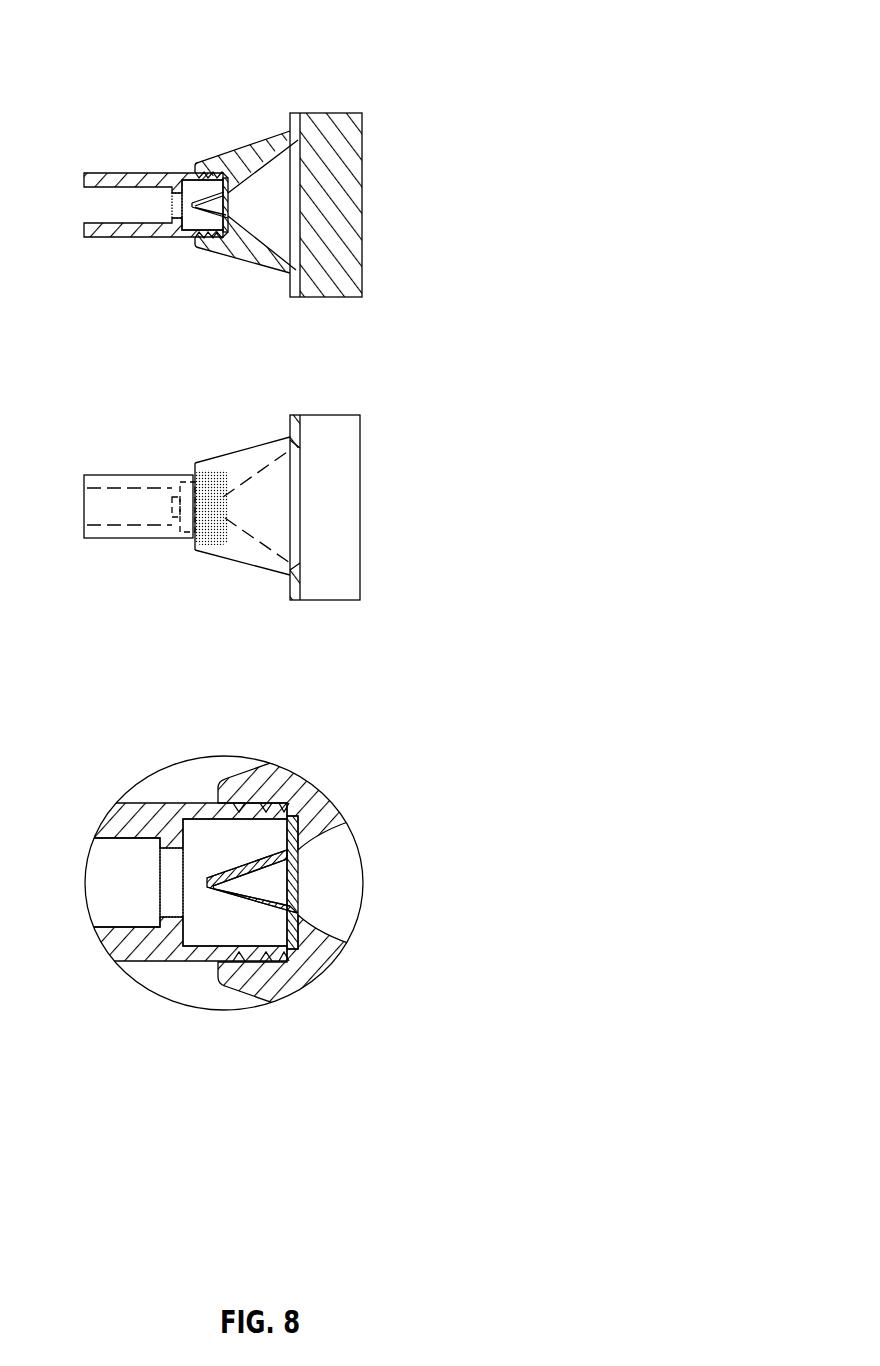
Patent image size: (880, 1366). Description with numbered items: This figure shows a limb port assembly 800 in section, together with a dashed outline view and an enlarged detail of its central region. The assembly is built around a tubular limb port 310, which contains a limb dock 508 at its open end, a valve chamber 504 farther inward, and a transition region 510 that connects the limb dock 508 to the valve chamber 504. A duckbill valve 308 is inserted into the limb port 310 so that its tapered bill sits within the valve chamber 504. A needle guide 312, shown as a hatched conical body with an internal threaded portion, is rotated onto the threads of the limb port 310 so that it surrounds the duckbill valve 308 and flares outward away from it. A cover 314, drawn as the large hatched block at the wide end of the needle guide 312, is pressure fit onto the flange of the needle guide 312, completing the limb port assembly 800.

The limb port assembly 800 is at (445, 53).
The limb port 310 is at (145, 482).
The duckbill valve 308 is at (205, 199).
The needle guide 312 is at (257, 457).
The cover 314 is at (345, 512).
The valve chamber 504 is at (218, 920).
The limb dock 508 is at (128, 897).
The transition region 510 is at (175, 895).